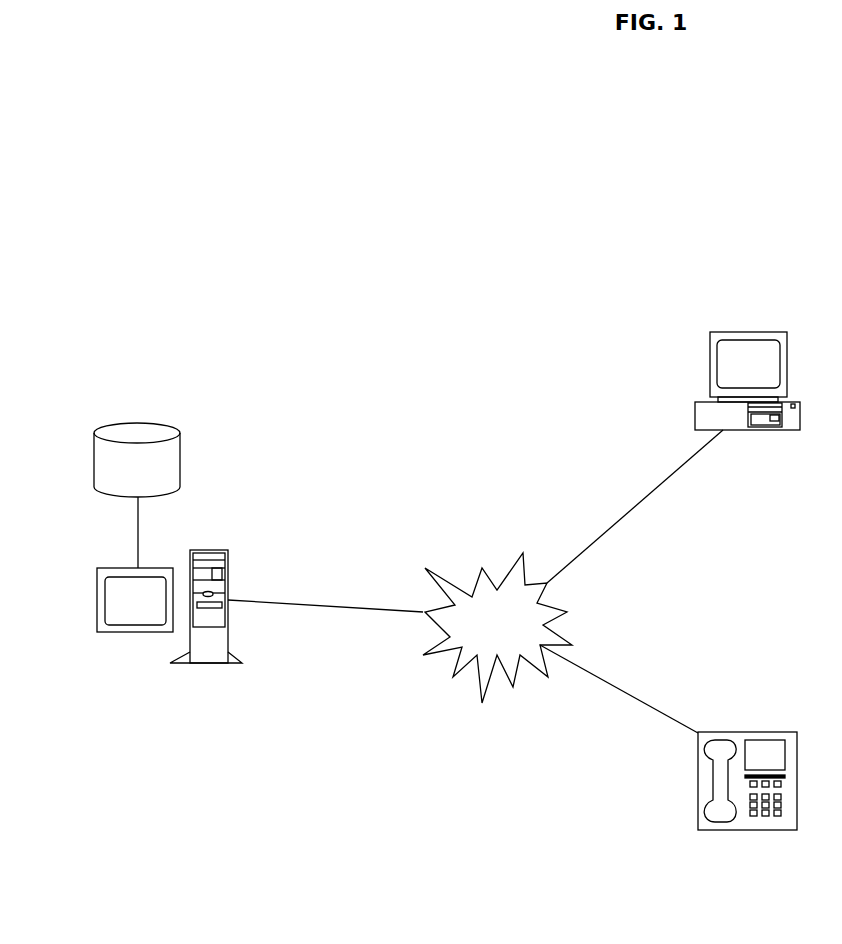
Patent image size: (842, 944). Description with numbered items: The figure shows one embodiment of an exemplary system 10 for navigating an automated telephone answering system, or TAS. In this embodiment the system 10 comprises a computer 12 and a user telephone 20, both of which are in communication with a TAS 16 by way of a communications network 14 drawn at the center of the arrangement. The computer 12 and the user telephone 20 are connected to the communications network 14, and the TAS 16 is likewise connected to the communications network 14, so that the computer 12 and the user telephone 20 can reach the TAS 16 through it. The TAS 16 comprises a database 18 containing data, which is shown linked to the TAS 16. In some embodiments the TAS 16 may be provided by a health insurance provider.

The system 10 is at (492, 392).
The computer 12 is at (775, 332).
The communications network 14 is at (474, 641).
The TAS 16 is at (132, 632).
The database 18 is at (140, 422).
The user telephone 20 is at (722, 830).